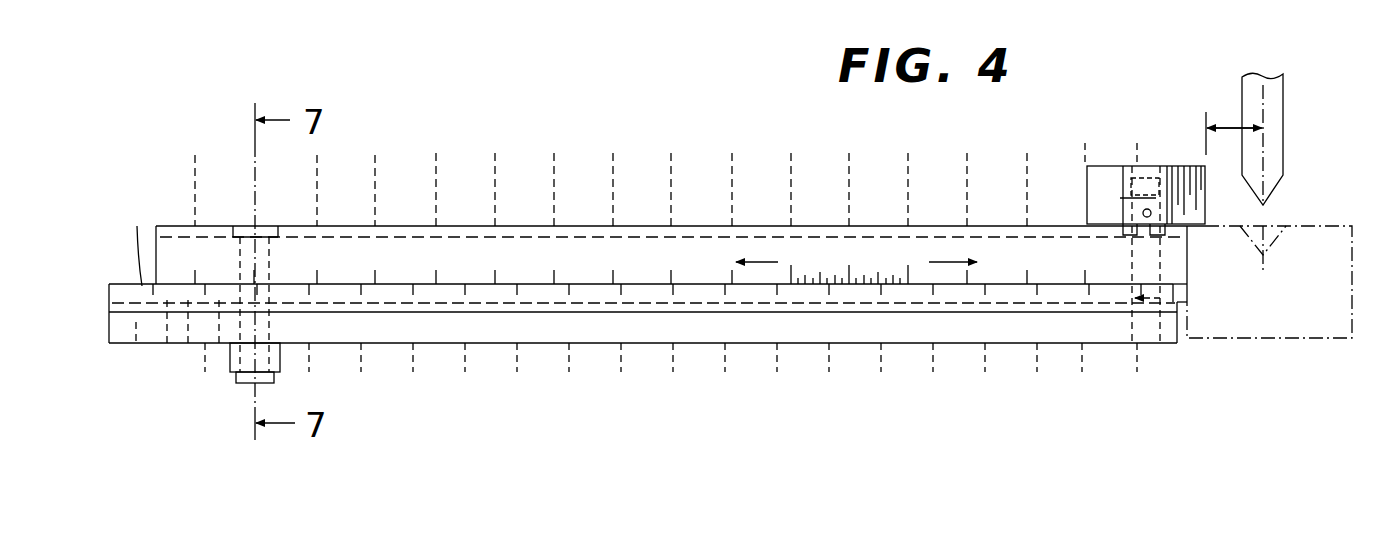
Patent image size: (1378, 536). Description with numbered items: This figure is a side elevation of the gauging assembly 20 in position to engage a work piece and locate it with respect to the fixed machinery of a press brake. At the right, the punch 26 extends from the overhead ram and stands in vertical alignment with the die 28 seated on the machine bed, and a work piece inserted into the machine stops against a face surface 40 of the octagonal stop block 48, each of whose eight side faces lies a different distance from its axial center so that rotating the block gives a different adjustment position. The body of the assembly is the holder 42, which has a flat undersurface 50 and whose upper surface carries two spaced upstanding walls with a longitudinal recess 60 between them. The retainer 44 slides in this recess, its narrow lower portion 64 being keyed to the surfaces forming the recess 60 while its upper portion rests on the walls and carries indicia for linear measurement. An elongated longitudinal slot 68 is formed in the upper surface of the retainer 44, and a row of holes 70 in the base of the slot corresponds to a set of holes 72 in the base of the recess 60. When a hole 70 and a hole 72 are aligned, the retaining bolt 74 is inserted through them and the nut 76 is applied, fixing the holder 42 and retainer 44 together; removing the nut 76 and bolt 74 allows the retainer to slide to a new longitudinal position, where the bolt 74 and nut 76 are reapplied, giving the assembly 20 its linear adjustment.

The gauging assembly 20 is at (684, 118).
The punch 26 is at (1275, 145).
The die 28 is at (1298, 327).
The face surface 40 is at (1185, 166).
The holder 42 is at (857, 345).
The retainer 44 is at (533, 226).
The stop block 48 is at (1113, 166).
The flat undersurface 50 is at (500, 345).
The longitudinal recess 60 is at (127, 322).
The narrow lower portion 64 is at (131, 242).
The longitudinal slot 68 is at (345, 236).
The holes 70 is at (268, 270).
The holes 72 is at (152, 337).
The retaining bolt 74 is at (238, 268).
The nut 76 is at (280, 357).